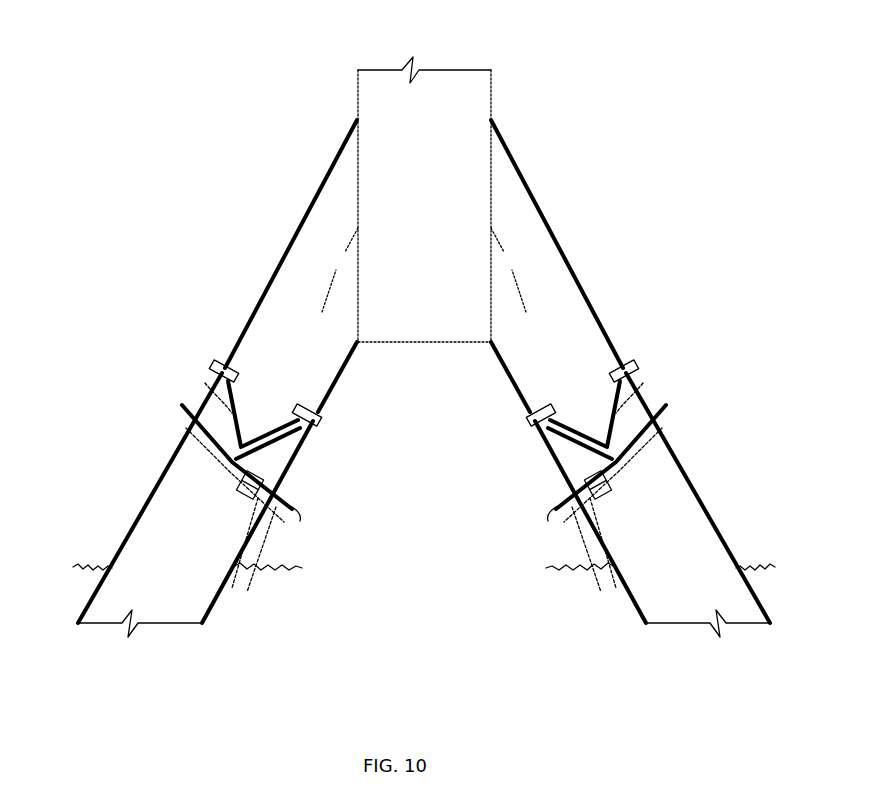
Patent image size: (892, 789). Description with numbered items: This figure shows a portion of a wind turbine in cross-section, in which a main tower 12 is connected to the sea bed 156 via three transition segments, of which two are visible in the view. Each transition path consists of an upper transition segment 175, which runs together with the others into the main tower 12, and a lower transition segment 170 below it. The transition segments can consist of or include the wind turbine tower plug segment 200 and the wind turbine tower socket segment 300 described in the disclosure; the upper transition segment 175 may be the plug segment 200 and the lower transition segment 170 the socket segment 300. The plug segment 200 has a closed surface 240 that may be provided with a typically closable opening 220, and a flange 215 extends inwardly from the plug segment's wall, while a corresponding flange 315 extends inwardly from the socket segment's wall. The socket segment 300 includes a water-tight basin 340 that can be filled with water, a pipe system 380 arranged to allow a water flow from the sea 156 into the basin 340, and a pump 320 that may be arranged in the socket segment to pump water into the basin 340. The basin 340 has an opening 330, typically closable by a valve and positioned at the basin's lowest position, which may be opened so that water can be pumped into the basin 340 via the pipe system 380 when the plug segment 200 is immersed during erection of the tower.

The main tower 12 is at (517, 74).
The upper transition segment 175 is at (297, 224).
The lower transition segment 170 is at (138, 509).
The wind turbine tower plug segment 200 is at (283, 336).
The flange 315 is at (222, 365).
The opening 220 is at (240, 440).
The flange 215 is at (232, 382).
The closed surface 240 is at (203, 386).
The basin 340 is at (196, 420).
The opening 330 is at (204, 446).
The pump 320 is at (236, 478).
The pipe system 380 is at (300, 518).
The sea bed 156 is at (253, 618).
The wind turbine tower socket segment 300 is at (192, 534).